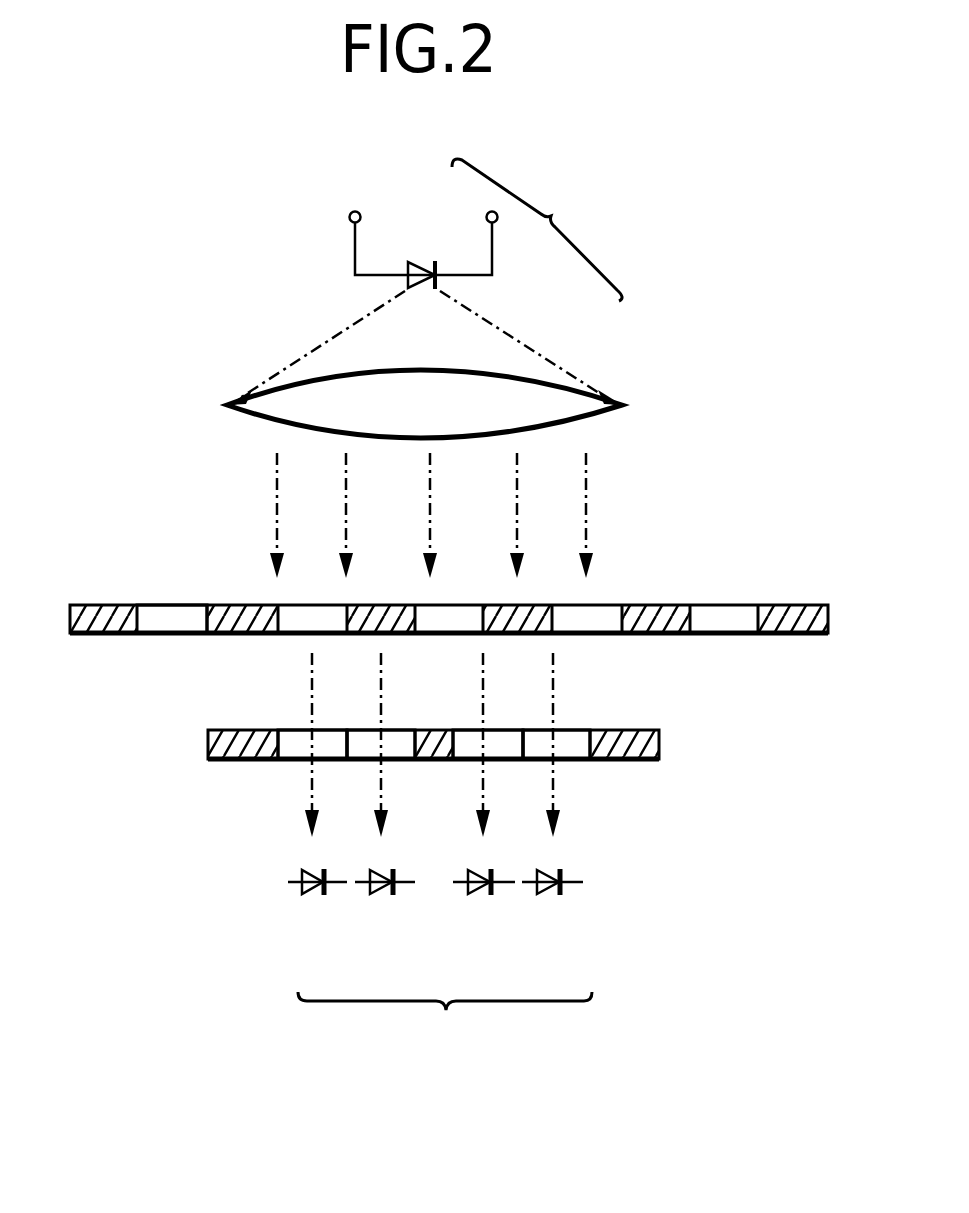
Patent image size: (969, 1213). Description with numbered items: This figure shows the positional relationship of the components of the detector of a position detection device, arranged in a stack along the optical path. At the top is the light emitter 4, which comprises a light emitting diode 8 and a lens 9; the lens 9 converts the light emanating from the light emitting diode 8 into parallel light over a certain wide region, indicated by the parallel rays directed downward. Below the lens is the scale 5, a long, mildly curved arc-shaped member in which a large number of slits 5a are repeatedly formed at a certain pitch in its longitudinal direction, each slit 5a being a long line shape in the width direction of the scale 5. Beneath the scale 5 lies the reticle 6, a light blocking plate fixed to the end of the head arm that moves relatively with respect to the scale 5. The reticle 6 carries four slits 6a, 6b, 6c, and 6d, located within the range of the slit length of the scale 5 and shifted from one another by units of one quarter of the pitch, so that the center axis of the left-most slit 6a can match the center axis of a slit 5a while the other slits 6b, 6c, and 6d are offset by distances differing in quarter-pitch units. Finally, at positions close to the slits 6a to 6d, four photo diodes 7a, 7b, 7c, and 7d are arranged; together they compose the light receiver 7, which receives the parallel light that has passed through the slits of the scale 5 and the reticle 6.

The light emitter 4 is at (537, 230).
The light emitting diode 8 is at (427, 260).
The lens 9 is at (558, 388).
The scale 5 is at (449, 572).
The slits 5a is at (151, 603).
The reticle 6 is at (433, 751).
The slit 6a is at (297, 728).
The slit 6b is at (507, 737).
The slit 6c is at (400, 737).
The slit 6d is at (580, 737).
The light receiver 7 is at (440, 965).
The photo diode 7a is at (320, 895).
The photo diode 7b is at (487, 895).
The photo diode 7c is at (388, 895).
The photo diode 7d is at (555, 895).